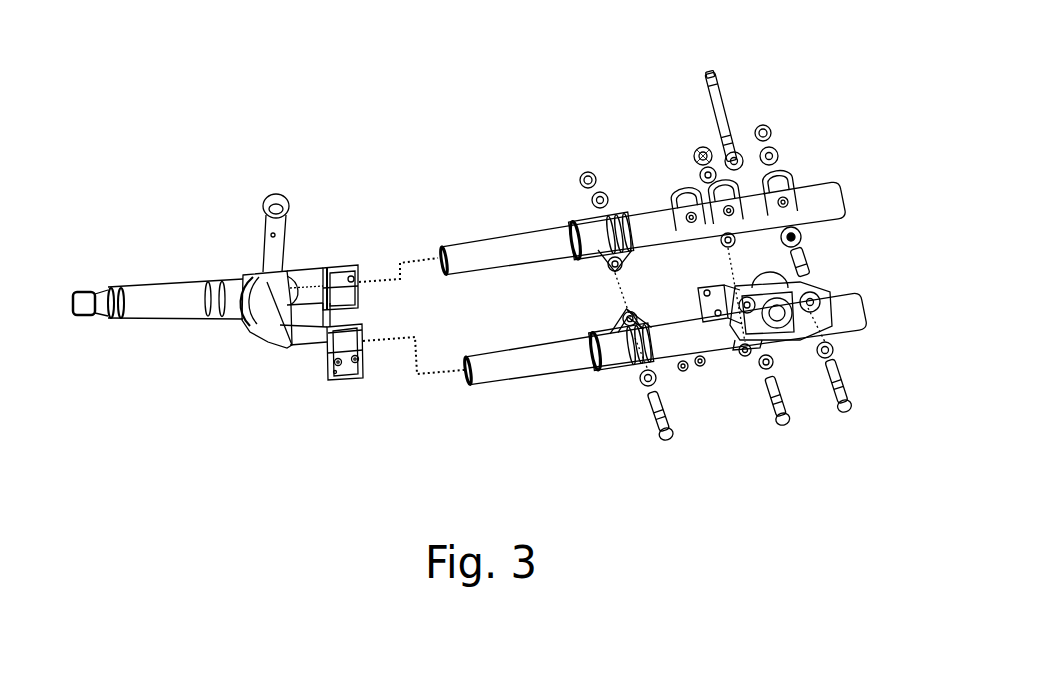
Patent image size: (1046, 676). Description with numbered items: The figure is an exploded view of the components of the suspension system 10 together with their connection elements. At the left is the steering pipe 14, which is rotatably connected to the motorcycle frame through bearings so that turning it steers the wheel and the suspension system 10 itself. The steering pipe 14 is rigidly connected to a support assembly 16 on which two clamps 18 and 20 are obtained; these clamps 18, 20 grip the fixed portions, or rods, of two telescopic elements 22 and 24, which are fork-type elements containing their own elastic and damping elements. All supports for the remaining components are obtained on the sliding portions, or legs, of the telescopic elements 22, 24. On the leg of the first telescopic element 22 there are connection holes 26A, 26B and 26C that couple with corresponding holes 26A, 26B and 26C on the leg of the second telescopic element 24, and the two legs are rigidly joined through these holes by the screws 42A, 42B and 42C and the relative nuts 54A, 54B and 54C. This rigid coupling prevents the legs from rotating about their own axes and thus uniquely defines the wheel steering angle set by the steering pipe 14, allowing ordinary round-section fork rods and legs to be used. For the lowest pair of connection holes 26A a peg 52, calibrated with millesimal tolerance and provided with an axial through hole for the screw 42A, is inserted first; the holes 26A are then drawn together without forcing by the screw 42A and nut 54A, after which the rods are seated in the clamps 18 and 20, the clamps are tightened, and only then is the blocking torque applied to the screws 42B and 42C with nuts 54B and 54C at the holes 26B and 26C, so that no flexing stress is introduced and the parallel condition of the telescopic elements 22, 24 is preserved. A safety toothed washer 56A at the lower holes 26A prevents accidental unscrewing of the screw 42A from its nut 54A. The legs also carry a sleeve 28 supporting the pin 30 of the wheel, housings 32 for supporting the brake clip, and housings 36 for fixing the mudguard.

The suspension system 10 is at (453, 168).
The steering pipe 14 is at (158, 284).
The support assembly 16 is at (300, 355).
The clamp 18 is at (334, 266).
The clamp 20 is at (348, 380).
The first telescopic element 22 is at (598, 373).
The second telescopic element 24 is at (571, 222).
The lower connection holes 26A is at (801, 240).
The connection holes 26B is at (724, 247).
The connection holes 26C is at (632, 318).
The sleeve 28 is at (770, 278).
The pin 30 is at (722, 97).
The housings 32 is at (714, 195).
The housings 36 is at (680, 197).
The screw 42A is at (845, 416).
The screw 42B is at (783, 430).
The screw 42C is at (663, 443).
The peg 52 is at (808, 263).
The nut 54A is at (768, 128).
The nut 54B is at (698, 147).
The nut 54C is at (588, 172).
The safety toothed washer 56A is at (779, 153).